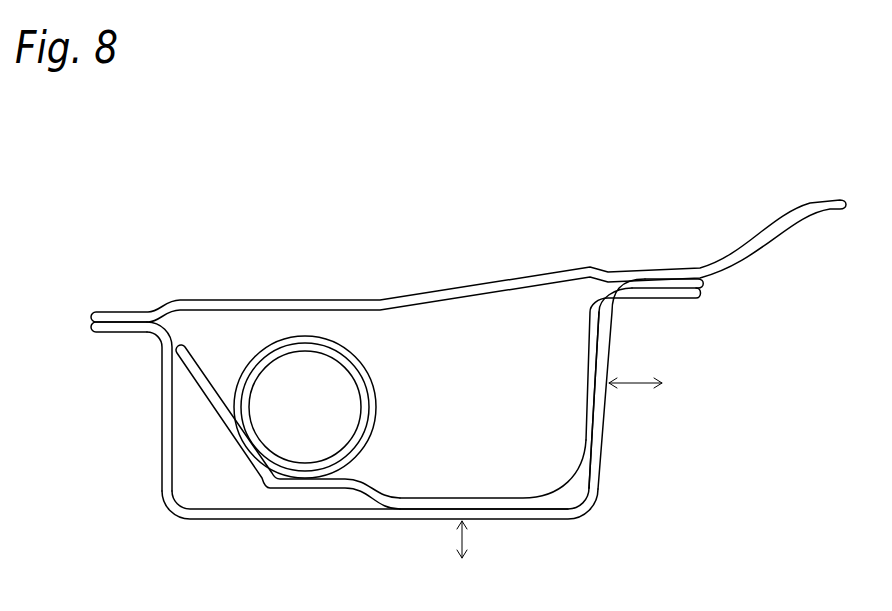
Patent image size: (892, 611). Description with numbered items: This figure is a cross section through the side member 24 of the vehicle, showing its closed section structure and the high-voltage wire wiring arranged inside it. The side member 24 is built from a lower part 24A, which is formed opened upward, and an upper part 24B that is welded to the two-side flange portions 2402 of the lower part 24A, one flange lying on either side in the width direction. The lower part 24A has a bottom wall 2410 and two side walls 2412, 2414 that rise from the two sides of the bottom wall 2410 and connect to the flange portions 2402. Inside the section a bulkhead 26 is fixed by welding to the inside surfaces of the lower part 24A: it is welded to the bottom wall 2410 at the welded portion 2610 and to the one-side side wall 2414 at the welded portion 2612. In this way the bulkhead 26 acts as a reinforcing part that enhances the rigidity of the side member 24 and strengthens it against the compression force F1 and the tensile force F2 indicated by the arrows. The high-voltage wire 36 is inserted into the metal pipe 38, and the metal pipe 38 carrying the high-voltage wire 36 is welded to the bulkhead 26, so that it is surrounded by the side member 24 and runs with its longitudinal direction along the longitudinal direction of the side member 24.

The side member 24 is at (345, 228).
The lower part 24A is at (398, 431).
The upper part 24B is at (430, 295).
The flange portions 2402 is at (94, 334).
The bottom wall 2410 is at (258, 520).
The side wall 2412 is at (161, 433).
The side wall 2414 is at (606, 413).
The bulkhead 26 is at (442, 425).
The welded portion 2610 is at (487, 514).
The welded portion 2612 is at (592, 432).
The high-voltage wire 36 is at (270, 367).
The metal pipe 38 is at (318, 338).
The compression force F1 is at (458, 554).
The tensile force F2 is at (649, 385).